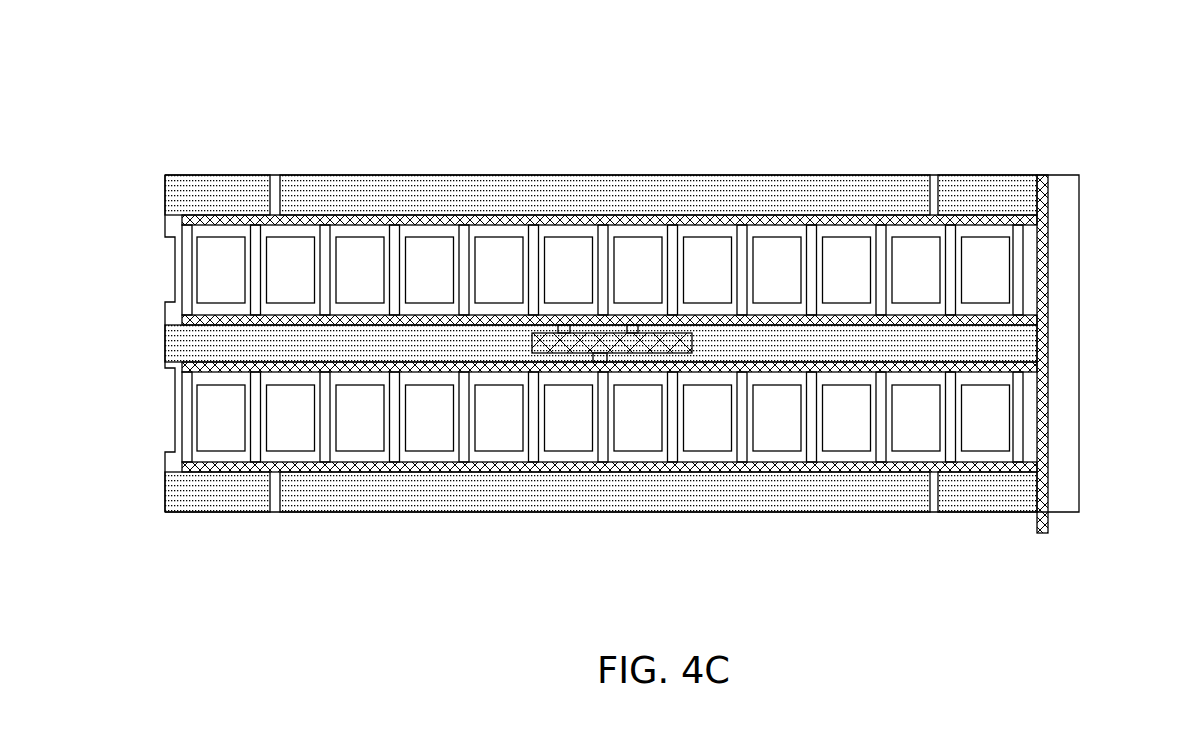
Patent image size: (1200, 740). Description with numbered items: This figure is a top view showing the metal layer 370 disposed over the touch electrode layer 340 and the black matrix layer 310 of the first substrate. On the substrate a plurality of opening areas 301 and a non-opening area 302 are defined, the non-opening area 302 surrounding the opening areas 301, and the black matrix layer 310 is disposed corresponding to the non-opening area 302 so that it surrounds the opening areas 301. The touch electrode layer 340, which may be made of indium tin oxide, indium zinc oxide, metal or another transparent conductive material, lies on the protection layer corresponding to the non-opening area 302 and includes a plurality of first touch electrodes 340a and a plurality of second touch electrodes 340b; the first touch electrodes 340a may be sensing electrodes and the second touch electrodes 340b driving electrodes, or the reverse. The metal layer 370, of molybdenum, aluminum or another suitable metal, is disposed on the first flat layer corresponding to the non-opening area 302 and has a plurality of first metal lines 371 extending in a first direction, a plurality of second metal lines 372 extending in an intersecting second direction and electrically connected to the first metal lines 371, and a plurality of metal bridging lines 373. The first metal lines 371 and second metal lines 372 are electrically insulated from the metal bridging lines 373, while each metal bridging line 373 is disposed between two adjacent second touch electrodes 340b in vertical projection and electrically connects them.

The opening area 301 is at (430, 438).
The non-opening area 302 is at (505, 453).
The black matrix layer 310 is at (1081, 277).
The touch electrode layer 340 is at (601, 274).
The first touch electrode 340a is at (605, 306).
The second touch electrode 340b is at (217, 207).
The metal layer 370 is at (652, 395).
The first metal line 371 is at (825, 472).
The second metal line 372 is at (1043, 533).
The metal bridging line 373 is at (622, 337).